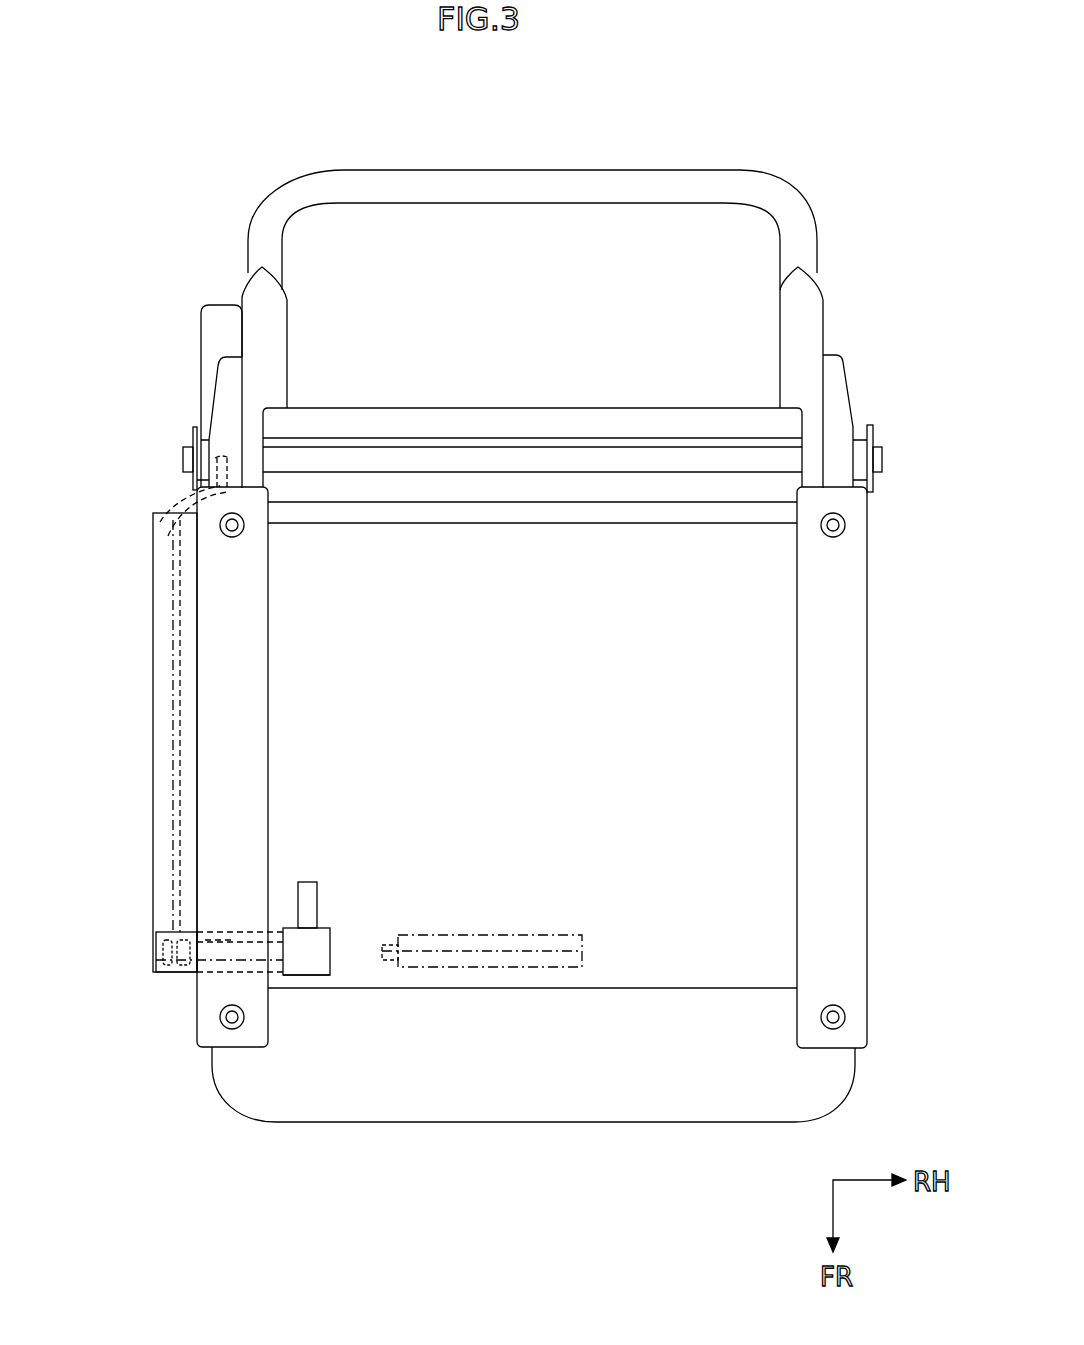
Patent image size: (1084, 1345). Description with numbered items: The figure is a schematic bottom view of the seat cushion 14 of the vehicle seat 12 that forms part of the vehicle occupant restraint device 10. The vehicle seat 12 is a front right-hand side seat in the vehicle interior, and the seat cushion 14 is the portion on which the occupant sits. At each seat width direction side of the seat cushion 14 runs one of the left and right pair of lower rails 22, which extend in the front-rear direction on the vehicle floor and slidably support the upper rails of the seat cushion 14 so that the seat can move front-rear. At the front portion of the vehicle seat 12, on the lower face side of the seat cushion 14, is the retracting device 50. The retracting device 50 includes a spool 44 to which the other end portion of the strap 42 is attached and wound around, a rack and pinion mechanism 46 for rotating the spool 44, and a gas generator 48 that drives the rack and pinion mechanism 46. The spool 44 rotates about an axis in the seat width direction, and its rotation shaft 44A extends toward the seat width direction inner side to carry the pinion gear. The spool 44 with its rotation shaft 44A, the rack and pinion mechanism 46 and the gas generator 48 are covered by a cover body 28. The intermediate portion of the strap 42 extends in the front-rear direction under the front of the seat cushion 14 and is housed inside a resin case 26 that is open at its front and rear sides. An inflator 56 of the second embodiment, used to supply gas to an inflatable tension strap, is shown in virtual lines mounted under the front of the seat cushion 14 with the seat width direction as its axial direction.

The vehicle occupant restraint device 10 is at (143, 556).
The vehicle seat 12 is at (684, 166).
The seat cushion 14 is at (397, 1128).
The lower rail 22 is at (245, 685).
The case 26 is at (153, 770).
The cover body 28 is at (153, 968).
The strap 42 is at (195, 509).
The spool 44 is at (175, 968).
The rotation shaft 44A is at (229, 942).
The rack and pinion mechanism 46 is at (334, 925).
The gas generator 48 is at (318, 881).
The retracting device 50 is at (298, 983).
The inflator 56 is at (525, 932).